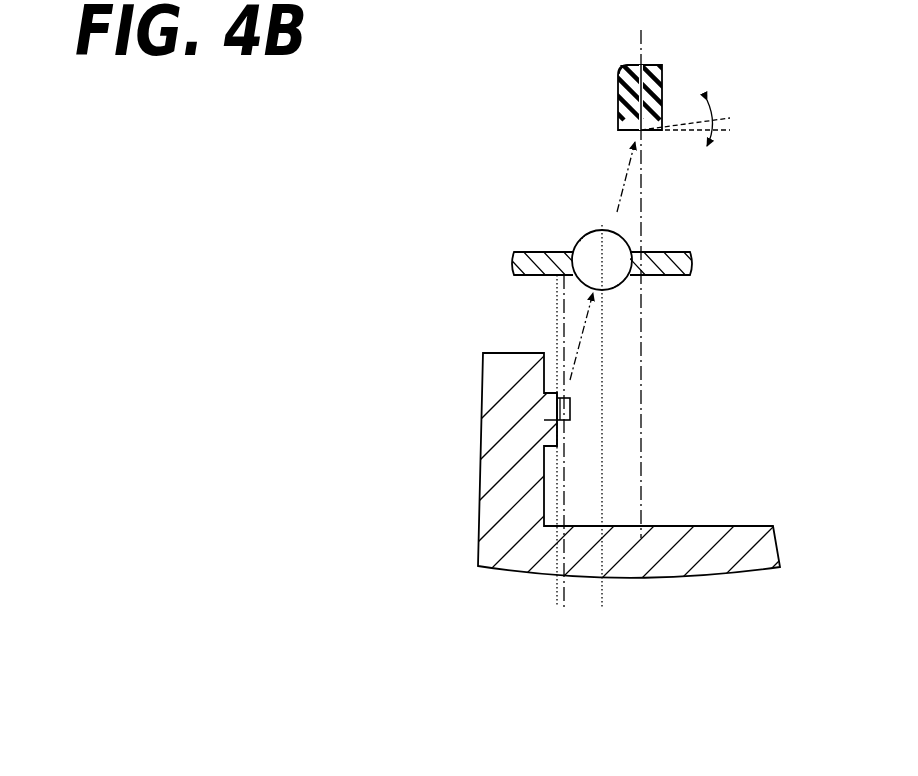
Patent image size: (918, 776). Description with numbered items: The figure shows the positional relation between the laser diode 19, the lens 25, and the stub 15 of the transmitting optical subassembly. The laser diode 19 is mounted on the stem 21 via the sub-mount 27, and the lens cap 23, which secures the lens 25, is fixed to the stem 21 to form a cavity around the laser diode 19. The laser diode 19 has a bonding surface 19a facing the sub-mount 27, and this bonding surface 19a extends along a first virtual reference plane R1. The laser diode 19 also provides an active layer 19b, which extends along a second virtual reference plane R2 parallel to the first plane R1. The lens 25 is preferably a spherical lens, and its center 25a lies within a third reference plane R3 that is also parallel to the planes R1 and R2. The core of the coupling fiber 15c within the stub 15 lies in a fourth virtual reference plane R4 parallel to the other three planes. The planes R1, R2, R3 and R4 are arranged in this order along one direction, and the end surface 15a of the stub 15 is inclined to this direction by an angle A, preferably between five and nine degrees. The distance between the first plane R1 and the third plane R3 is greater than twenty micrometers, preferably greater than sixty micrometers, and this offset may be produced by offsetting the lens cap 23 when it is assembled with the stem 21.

The stub 15 is at (628, 105).
The end surface of the stub 15a is at (647, 131).
The coupling fiber 15c is at (620, 72).
The laser diode 19 is at (572, 407).
The bonding surface 19a is at (548, 400).
The active layer 19b is at (547, 396).
The stem 21 is at (767, 545).
The lens cap 23 is at (512, 253).
The lens 25 is at (582, 233).
The center of the lens 25a is at (618, 250).
The sub-mount 27 is at (550, 437).
The first virtual reference plane R1 is at (562, 593).
The second virtual reference plane R2 is at (535, 577).
The third reference plane R3 is at (593, 593).
The fourth virtual reference plane R4 is at (643, 500).
The angle of the inclined end surface A is at (728, 123).